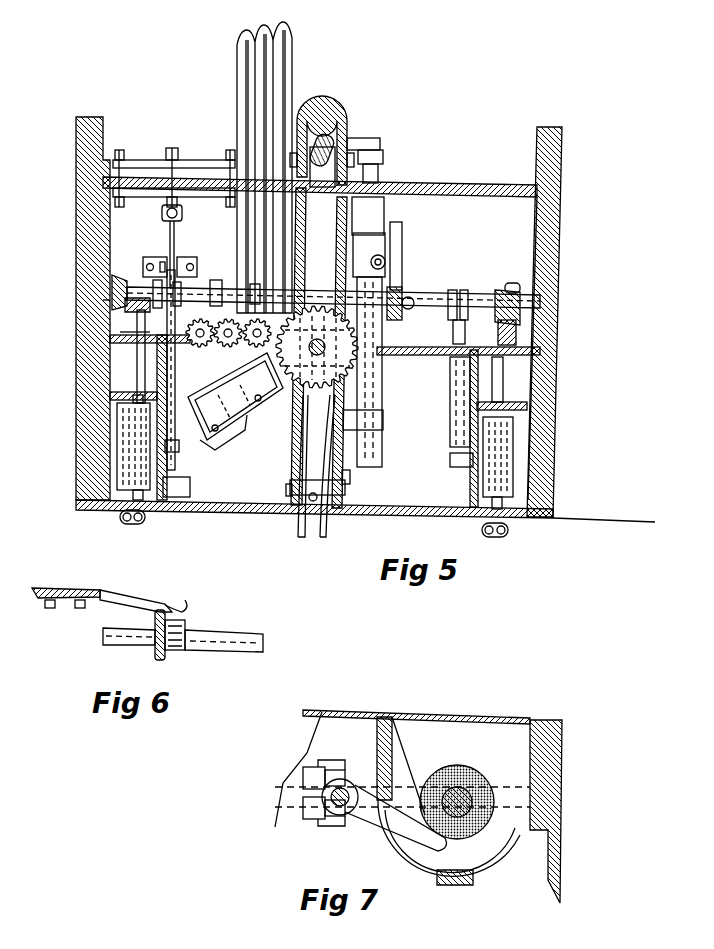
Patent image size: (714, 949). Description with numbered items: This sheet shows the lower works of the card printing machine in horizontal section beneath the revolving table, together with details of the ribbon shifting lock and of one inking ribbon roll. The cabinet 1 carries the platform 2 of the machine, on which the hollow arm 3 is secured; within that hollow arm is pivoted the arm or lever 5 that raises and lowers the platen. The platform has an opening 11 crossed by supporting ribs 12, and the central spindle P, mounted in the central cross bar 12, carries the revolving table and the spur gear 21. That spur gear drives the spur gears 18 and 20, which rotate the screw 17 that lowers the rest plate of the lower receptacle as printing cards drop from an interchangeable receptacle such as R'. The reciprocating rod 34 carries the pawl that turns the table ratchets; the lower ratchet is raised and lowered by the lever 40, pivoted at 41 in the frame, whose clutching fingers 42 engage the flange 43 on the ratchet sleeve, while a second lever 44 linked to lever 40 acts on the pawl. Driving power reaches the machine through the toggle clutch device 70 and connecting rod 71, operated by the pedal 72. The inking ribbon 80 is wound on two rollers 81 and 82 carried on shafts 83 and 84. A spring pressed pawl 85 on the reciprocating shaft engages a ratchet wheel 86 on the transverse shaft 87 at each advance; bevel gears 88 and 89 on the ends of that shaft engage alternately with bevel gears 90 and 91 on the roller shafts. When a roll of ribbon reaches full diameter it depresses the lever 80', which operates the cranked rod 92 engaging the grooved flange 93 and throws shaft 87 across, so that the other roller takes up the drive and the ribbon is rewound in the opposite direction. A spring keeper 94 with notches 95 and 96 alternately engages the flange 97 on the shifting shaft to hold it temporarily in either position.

In FIG. 5, the cabinet 1 is at (562, 225).
In FIG. 5, the platform 2 is at (528, 270).
In FIG. 5, the hollow arm 3 is at (346, 120).
In FIG. 5, the arm or lever 5 is at (330, 143).
In FIG. 5, the opening 11 is at (455, 186).
In FIG. 5, the supporting ribs 12 is at (402, 357).
In FIG. 5, the screw 17 is at (200, 290).
In FIG. 5, the spur gear 18 is at (135, 330).
In FIG. 5, the spur gear 20 is at (317, 347).
In FIG. 5, the spur gear 21 is at (370, 385).
In FIG. 5, the reciprocating rod 34 is at (383, 232).
In FIG. 5, the lever 40 is at (296, 540).
In FIG. 5, the pivot 41 is at (292, 492).
In FIG. 5, the clutching fingers 42 is at (187, 449).
In FIG. 5, the flange 43 is at (343, 475).
In FIG. 5, the second lever 44 is at (318, 530).
In FIG. 5, the toggle clutch device 70 is at (128, 192).
In FIG. 5, the connecting rod 71 is at (166, 212).
In FIG. 5, the pedal 72 is at (182, 247).
In FIG. 7, the inking ribbon 80 is at (416, 775).
In FIG. 5, the lever 80' is at (318, 384).
In FIG. 5, the roller 81 is at (160, 425).
In FIG. 7, the roller 81 is at (485, 830).
In FIG. 5, the roller 82 is at (513, 452).
In FIG. 5, the shaft 83 is at (505, 385).
In FIG. 5, the shaft 84 is at (150, 352).
In FIG. 5, the spring pressed pawl 85 is at (402, 275).
In FIG. 5, the ratchet wheel 86 is at (408, 300).
In FIG. 5, the transverse shaft 87 is at (335, 292).
In FIG. 6, the transverse shaft 87 is at (245, 650).
In FIG. 5, the bevel gear 88 is at (515, 292).
In FIG. 5, the bevel gear 89 is at (131, 284).
In FIG. 5, the bevel gear 90 is at (516, 333).
In FIG. 5, the bevel gear 91 is at (125, 318).
In FIG. 5, the cranked rod 92 is at (453, 338).
In FIG. 7, the cranked rod 92 is at (342, 826).
In FIG. 5, the grooved flange 93 is at (460, 290).
In FIG. 6, the spring keeper 94 is at (125, 606).
In FIG. 6, the notch 95 is at (176, 612).
In FIG. 6, the notch 96 is at (184, 612).
In FIG. 5, the flange 97 is at (330, 275).
In FIG. 6, the flange 97 is at (163, 660).
In FIG. 5, the central spindle P is at (311, 344).
In FIG. 5, the interchangeable receptacle R' is at (223, 441).